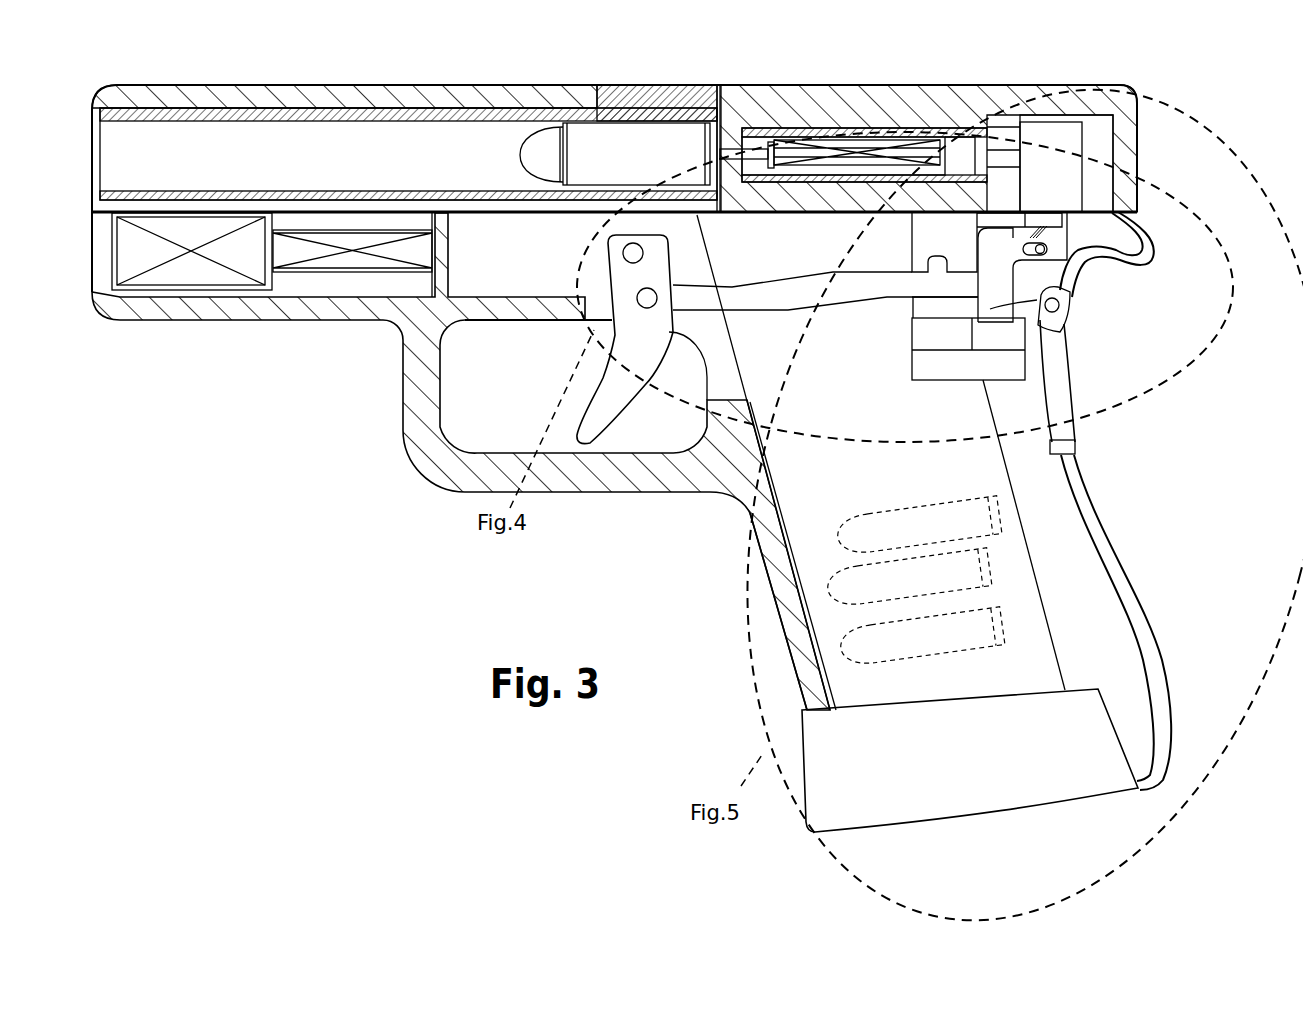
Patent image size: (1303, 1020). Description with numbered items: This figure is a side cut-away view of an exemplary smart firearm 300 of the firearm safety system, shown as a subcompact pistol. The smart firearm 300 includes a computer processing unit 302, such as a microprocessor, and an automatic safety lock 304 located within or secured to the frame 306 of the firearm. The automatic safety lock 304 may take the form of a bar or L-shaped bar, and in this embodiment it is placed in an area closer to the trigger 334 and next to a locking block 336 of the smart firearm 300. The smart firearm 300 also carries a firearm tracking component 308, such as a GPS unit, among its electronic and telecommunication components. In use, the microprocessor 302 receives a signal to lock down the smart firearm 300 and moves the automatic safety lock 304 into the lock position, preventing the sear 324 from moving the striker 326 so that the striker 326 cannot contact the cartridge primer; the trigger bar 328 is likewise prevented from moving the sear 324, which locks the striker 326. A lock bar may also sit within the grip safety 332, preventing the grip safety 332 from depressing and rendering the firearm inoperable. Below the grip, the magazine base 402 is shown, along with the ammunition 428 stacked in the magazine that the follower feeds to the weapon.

The smart firearm 300 is at (1113, 58).
The computer processing unit 302 is at (932, 232).
The automatic safety lock 304 is at (1047, 251).
The frame 306 is at (724, 456).
The firearm tracking component 308 is at (927, 307).
The sear 324 is at (1068, 322).
The striker 326 is at (920, 155).
The trigger bar 328 is at (752, 303).
The grip safety 332 is at (1052, 385).
The trigger 334 is at (610, 412).
The locking block 336 is at (518, 262).
The magazine base 402 is at (975, 774).
The ammunition 428 is at (623, 165).